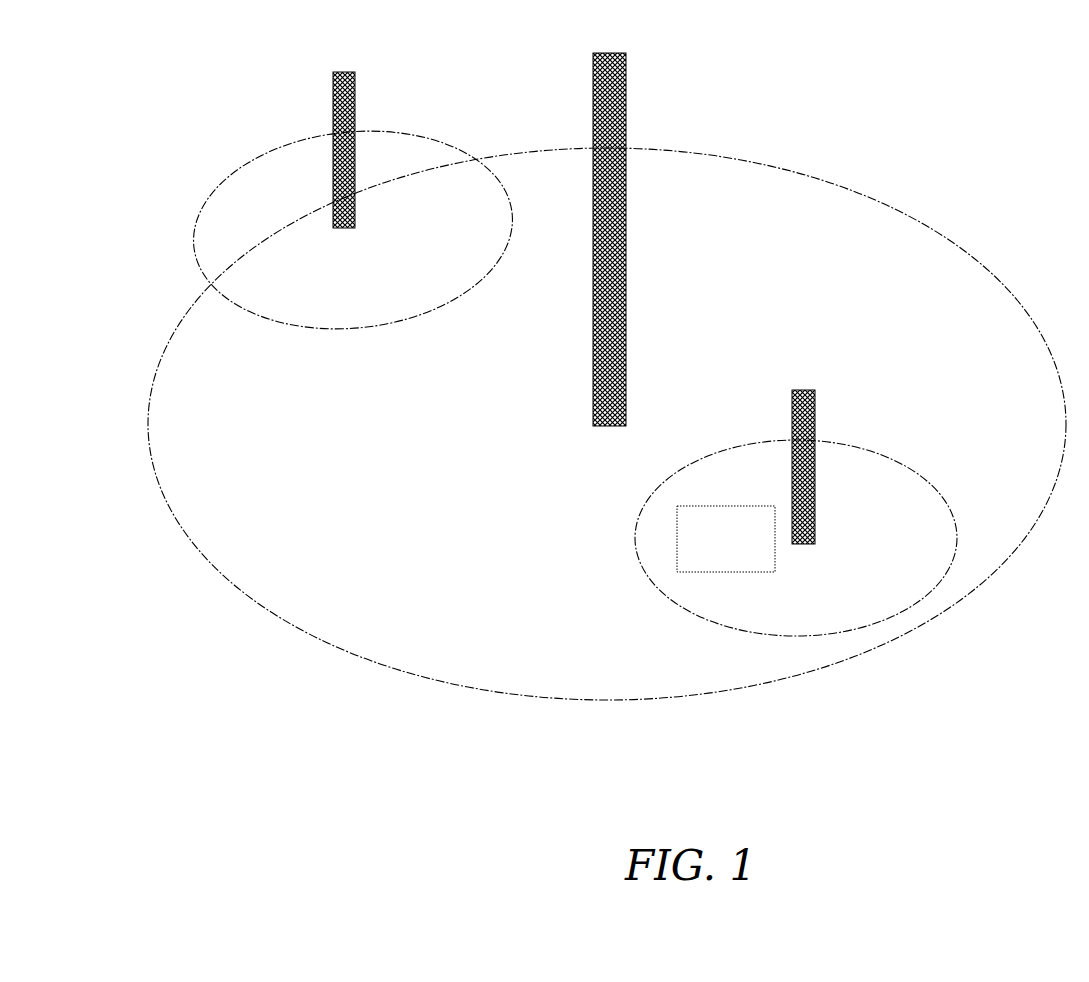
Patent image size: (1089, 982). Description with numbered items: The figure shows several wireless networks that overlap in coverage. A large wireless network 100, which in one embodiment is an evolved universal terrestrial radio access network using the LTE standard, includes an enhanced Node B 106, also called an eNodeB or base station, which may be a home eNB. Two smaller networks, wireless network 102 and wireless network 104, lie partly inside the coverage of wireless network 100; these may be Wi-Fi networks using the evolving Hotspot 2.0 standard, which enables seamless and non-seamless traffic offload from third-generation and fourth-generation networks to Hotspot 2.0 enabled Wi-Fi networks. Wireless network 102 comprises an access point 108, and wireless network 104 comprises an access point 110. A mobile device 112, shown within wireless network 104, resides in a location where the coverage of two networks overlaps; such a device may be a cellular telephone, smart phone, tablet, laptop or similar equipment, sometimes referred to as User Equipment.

The wireless network 100 is at (843, 185).
The wireless network 102 is at (258, 163).
The wireless network 104 is at (645, 523).
The enhanced Node B 106 is at (626, 97).
The access point 108 is at (333, 100).
The access point 110 is at (816, 396).
The mobile device 112 is at (686, 573).